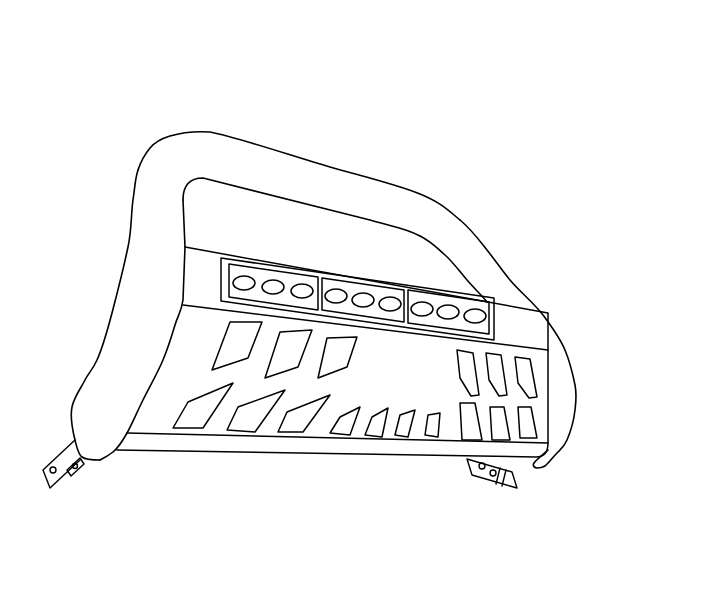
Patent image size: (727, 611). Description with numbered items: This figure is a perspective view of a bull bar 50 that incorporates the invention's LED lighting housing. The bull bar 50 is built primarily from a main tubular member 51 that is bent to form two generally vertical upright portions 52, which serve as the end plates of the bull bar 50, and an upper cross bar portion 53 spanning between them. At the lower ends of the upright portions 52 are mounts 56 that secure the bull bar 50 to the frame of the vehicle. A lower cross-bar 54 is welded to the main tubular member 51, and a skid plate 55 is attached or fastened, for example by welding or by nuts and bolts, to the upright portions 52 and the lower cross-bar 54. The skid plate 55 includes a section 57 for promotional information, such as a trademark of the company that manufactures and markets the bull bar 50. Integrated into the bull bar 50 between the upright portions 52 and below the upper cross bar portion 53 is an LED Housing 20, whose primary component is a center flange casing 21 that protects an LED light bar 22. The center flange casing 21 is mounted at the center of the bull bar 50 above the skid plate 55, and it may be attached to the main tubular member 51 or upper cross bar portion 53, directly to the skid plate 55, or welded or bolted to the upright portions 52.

The bull bar 50 is at (183, 75).
The main tubular member 51 is at (170, 174).
The upright portions 52 is at (132, 343).
The upper cross bar portion 53 is at (318, 185).
The lower cross-bar 54 is at (352, 447).
The skid plate 55 is at (545, 372).
The mounts 56 is at (60, 460).
The section for promotional information 57 is at (413, 383).
The LED Housing 20 is at (412, 267).
The center flange casing 21 is at (207, 267).
The LED light bar 22 is at (360, 297).